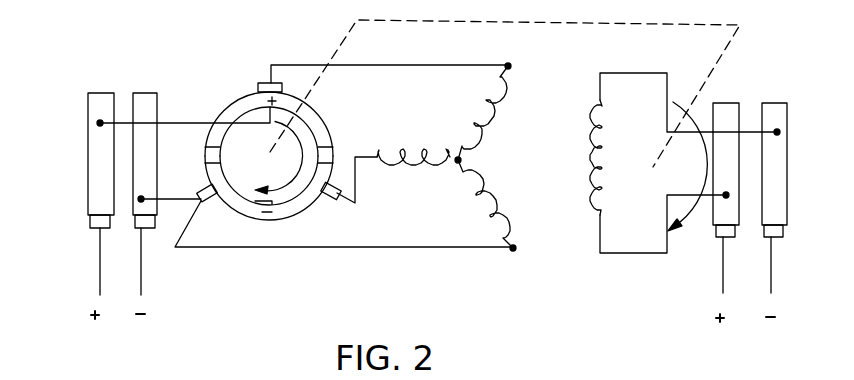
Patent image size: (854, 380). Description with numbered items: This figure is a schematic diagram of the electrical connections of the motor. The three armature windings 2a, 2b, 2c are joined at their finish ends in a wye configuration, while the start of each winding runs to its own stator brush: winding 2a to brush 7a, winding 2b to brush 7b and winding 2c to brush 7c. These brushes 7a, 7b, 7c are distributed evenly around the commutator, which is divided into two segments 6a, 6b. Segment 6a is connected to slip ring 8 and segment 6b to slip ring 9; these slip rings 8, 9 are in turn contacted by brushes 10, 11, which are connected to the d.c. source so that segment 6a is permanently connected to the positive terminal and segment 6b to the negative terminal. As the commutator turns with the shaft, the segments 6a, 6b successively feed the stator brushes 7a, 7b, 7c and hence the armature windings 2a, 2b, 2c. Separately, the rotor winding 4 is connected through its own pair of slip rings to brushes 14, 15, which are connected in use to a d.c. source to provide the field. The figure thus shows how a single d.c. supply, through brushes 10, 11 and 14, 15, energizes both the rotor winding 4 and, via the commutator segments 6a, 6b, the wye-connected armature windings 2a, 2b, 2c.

The armature winding 2a is at (490, 124).
The armature winding 2b is at (410, 150).
The armature winding 2c is at (496, 206).
The rotor winding 4 is at (600, 182).
The commutator segment 6a is at (235, 108).
The commutator segment 6b is at (290, 217).
The brush 7a is at (268, 83).
The brush 7b is at (343, 202).
The brush 7c is at (203, 186).
The slip ring 8 is at (100, 100).
The slip ring 9 is at (150, 100).
The brush 10 is at (95, 228).
The brush 11 is at (138, 228).
The brush 14 is at (723, 108).
The brush 15 is at (773, 108).